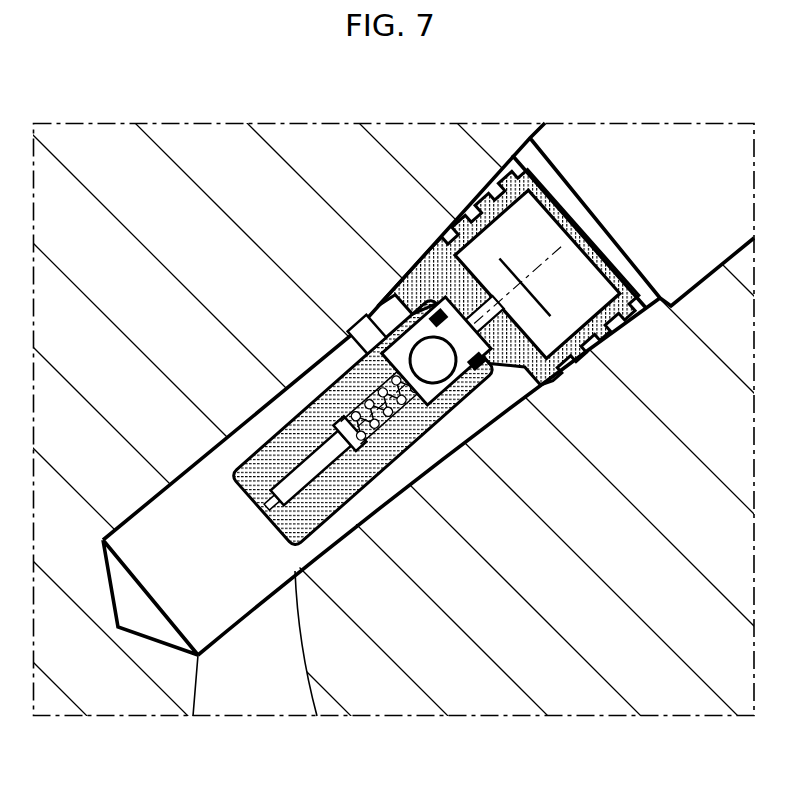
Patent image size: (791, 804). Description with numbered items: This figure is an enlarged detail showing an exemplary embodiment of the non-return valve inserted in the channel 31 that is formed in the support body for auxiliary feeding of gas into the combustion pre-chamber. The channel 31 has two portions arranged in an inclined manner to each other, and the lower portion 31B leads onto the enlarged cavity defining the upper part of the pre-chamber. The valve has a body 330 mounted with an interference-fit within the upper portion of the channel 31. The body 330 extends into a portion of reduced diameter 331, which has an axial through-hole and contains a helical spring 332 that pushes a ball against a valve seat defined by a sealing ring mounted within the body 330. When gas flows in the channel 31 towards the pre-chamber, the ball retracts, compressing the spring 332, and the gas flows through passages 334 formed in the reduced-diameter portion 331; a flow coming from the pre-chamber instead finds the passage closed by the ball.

The channel 31 is at (183, 458).
The lower portion of the channel 31B is at (203, 682).
The body 330 is at (508, 407).
The portion of reduced diameter 331 is at (290, 545).
The helical spring 332 is at (369, 430).
The passages 334 is at (355, 333).